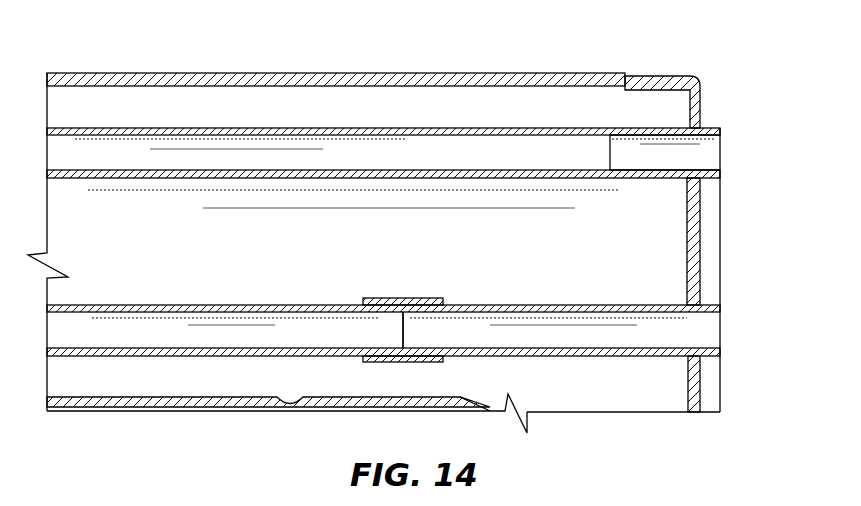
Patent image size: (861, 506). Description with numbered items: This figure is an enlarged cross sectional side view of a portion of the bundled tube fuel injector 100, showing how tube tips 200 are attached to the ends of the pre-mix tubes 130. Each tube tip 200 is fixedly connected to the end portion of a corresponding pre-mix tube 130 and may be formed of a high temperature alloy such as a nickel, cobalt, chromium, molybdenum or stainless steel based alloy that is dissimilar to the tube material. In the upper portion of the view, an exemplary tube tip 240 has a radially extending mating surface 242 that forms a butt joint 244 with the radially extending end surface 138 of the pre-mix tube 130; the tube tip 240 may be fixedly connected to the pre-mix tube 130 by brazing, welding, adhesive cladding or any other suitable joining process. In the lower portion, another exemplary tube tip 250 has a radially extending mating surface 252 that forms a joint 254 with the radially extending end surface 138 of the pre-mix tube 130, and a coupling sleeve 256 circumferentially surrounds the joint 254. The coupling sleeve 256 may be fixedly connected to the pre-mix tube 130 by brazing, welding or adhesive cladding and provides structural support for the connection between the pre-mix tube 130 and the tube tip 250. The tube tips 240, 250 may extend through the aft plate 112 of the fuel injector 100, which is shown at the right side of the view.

The fuel injector 100 is at (565, 60).
The aft plate 112 is at (695, 398).
The pre-mix tube 130 is at (217, 178).
The radially extending end surface 138 is at (610, 160).
The tube tip 200 is at (712, 118).
The tube tip 240 is at (630, 178).
The radially extending mating surface 242 is at (612, 150).
The butt joint 244 is at (604, 182).
The tube tip 250 is at (578, 356).
The radially extending mating surface 252 is at (405, 328).
The joint 254 is at (395, 347).
The coupling sleeve 256 is at (397, 300).